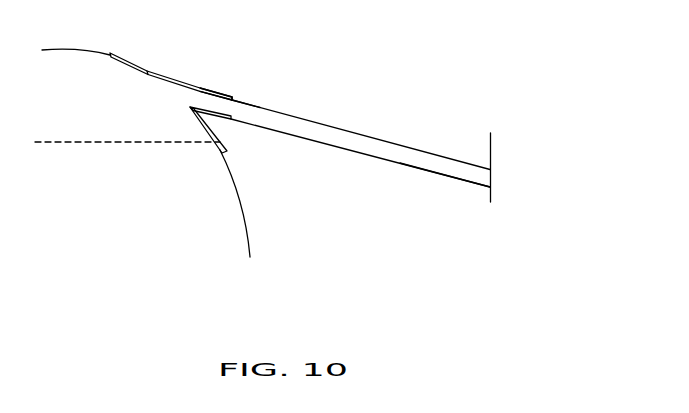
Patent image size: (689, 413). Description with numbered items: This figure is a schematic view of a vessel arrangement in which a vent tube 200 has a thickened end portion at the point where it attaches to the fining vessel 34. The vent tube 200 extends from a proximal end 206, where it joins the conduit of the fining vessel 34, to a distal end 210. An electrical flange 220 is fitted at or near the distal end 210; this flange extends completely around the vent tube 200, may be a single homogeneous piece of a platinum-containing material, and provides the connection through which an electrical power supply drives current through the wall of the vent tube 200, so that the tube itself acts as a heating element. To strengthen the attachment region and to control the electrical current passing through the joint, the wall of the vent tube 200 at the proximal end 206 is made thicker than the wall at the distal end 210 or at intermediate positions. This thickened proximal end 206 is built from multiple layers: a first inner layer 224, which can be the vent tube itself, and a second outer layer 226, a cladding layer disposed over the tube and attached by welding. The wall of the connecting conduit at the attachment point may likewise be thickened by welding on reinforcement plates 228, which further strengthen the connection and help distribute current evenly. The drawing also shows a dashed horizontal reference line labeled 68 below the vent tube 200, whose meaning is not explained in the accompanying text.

The fining vessel 34 is at (92, 50).
The lower surface / reference line 68 is at (111, 141).
The vent tube 200 is at (336, 117).
The proximal end 206 is at (184, 70).
The distal end 210 is at (475, 198).
The electrical flange 220 is at (491, 153).
The inner layer 224 is at (200, 88).
The outer layer 226 is at (232, 96).
The reinforcement plate 228 is at (136, 60).